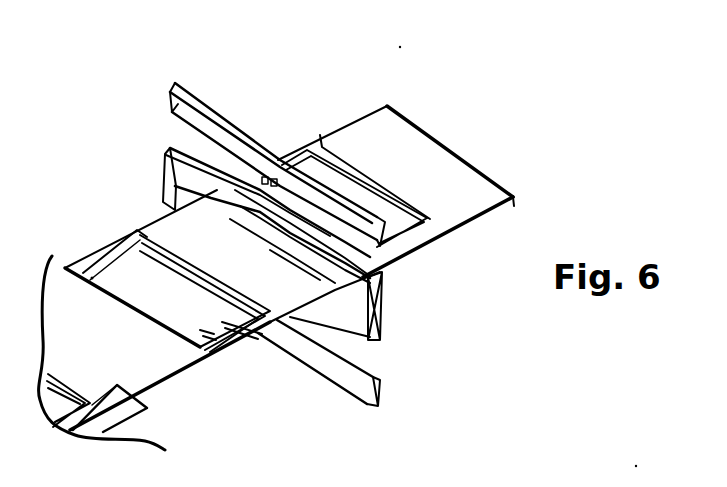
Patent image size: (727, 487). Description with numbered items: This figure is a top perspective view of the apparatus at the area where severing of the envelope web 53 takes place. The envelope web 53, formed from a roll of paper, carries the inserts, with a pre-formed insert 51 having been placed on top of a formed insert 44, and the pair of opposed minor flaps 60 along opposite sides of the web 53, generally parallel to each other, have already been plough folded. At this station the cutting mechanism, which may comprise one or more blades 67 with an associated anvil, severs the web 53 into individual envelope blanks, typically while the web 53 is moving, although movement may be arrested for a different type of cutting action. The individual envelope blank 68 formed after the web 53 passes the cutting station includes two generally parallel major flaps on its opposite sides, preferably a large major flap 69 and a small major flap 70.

The formed insert 44 is at (207, 338).
The pre-formed insert 51 is at (145, 292).
The envelope web 53 is at (66, 302).
The minor flaps 60 is at (232, 334).
The blades 67 is at (172, 86).
The envelope blank 68 is at (522, 203).
The large major flap 69 is at (430, 145).
The small major flap 70 is at (377, 274).